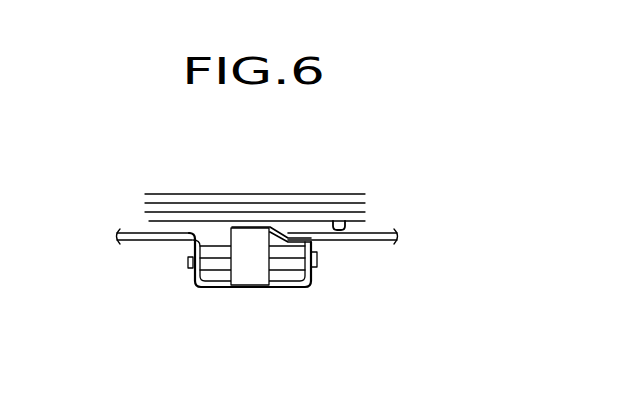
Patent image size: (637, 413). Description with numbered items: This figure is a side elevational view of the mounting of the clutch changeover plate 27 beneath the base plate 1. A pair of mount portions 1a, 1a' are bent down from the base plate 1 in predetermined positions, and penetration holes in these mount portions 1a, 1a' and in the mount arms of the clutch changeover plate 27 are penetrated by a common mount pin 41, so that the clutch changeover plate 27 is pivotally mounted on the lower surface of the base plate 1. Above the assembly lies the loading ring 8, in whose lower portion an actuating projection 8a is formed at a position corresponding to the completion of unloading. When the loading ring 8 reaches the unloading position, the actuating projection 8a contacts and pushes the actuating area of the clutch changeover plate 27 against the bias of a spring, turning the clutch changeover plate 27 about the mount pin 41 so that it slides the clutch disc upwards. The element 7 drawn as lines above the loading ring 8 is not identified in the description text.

The base plate 1 is at (380, 241).
The mount portion 1a is at (339, 276).
The mount portion 1a' is at (155, 269).
The head 7 is at (385, 196).
The loading ring 8 is at (365, 213).
The actuating projection 8a is at (340, 220).
The clutch changeover plate 27 is at (250, 278).
The mount pin 41 is at (215, 262).